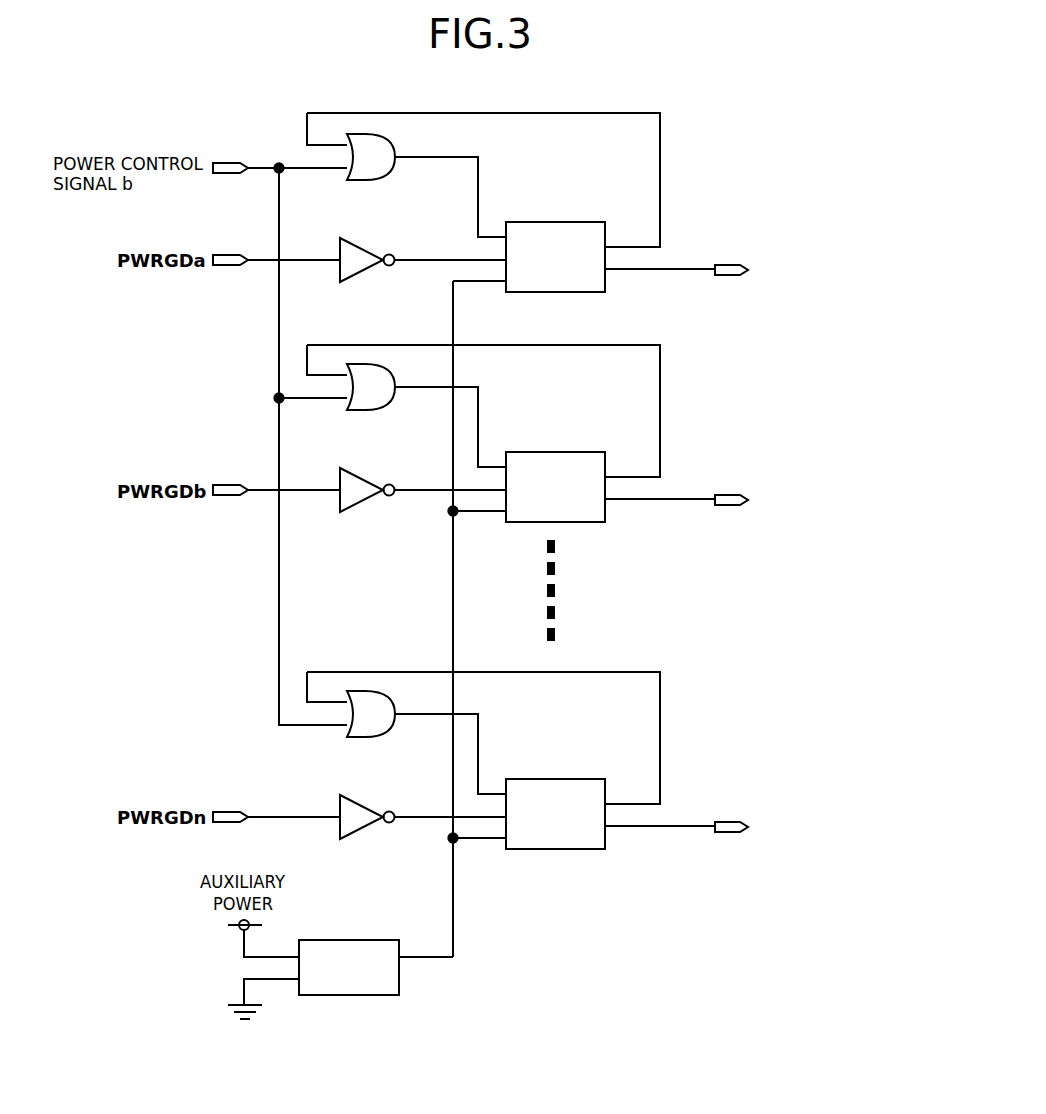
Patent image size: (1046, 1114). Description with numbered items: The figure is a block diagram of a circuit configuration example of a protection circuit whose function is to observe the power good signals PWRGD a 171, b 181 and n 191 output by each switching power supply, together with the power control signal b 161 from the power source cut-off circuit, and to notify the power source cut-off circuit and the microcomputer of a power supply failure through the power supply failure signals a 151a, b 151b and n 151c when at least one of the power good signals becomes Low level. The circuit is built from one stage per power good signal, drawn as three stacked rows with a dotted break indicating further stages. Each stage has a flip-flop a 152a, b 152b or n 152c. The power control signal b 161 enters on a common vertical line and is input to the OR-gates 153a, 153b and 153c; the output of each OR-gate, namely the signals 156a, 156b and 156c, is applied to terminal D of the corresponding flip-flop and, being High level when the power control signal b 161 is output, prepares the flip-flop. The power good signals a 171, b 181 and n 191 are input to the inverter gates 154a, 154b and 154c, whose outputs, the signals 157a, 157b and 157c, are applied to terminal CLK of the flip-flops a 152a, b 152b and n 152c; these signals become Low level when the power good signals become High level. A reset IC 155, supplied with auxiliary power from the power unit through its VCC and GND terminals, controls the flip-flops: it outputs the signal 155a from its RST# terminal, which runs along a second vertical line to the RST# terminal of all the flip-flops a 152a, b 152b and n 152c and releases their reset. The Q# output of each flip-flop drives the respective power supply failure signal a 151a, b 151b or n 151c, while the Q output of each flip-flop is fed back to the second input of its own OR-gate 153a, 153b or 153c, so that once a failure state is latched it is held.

The power control signal b 161 is at (263, 165).
The power good signal PWRGD a 171 is at (260, 262).
The power good signal PWRGD b 181 is at (276, 516).
The power good signal PWRGD n 191 is at (276, 792).
The power supply failure signal a 151a is at (697, 270).
The power supply failure signal b 151b is at (753, 517).
The power supply failure signal n 151c is at (753, 844).
The flip-flop a 152a is at (587, 292).
The flip-flop b 152b is at (483, 461).
The flip-flop n 152c is at (483, 788).
The OR-gate 153a is at (352, 180).
The OR-gate 153b is at (341, 406).
The OR-gate 153c is at (340, 733).
The inverter gate 154a is at (352, 282).
The inverter gate 154b is at (372, 515).
The inverter gate 154c is at (370, 843).
The reset IC 155 is at (380, 995).
The signal 155a is at (442, 957).
The signal 156a is at (408, 157).
The signal 156b is at (449, 427).
The signal 156c is at (449, 754).
The signal 157a is at (408, 262).
The signal 157b is at (449, 517).
The signal 157c is at (449, 844).